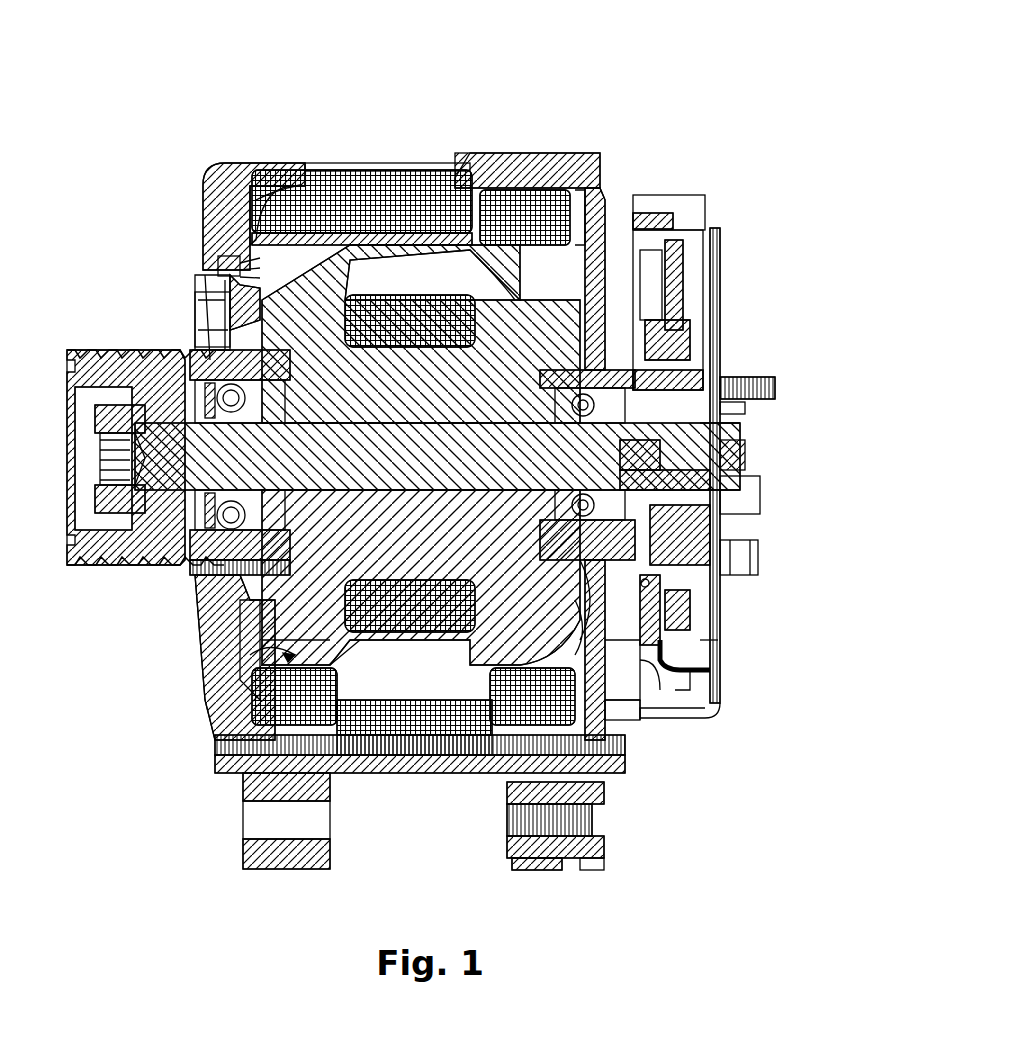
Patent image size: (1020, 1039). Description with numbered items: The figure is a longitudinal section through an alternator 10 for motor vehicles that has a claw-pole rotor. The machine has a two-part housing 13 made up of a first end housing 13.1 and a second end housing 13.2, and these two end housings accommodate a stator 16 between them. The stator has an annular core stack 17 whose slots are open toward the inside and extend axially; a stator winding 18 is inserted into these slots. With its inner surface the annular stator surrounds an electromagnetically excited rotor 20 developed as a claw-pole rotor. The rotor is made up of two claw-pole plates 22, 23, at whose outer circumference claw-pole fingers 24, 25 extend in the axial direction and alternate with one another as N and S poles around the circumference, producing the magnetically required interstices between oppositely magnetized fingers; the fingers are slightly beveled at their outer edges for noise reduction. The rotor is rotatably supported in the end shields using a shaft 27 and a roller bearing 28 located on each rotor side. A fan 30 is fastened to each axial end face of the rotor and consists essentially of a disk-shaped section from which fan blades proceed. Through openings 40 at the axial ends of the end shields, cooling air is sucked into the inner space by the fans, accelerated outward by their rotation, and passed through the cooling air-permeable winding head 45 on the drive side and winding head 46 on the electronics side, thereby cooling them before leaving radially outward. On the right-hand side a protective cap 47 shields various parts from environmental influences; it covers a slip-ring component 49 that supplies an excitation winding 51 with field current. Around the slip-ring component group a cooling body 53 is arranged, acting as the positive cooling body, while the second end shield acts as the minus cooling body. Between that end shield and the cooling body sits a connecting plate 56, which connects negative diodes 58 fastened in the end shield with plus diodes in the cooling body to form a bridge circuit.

The alternator 10 is at (650, 70).
The two-part housing 13 is at (208, 152).
The first end housing 13.1 is at (242, 160).
The second end housing 13.2 is at (588, 160).
The stator 16 is at (406, 152).
The annular core stack 17 is at (372, 162).
The stator winding 18 is at (487, 160).
The rotor 20 is at (250, 665).
The claw-pole plate 22 is at (175, 480).
The claw-pole plate 23 is at (655, 580).
The claw-pole fingers 24 is at (250, 232).
The claw-pole fingers 25 is at (565, 265).
The shaft 27 is at (128, 540).
The roller bearing 28 is at (212, 358).
The fan 30 is at (228, 267).
The openings 40 is at (215, 310).
The winding head 45 is at (292, 160).
The winding head 46 is at (540, 160).
The protective cap 47 is at (710, 625).
The slip-ring component 49 is at (690, 490).
The excitation winding 51 is at (405, 700).
The cooling body 53 is at (672, 290).
The connecting plate 56 is at (680, 605).
The negative diodes 58 is at (648, 710).